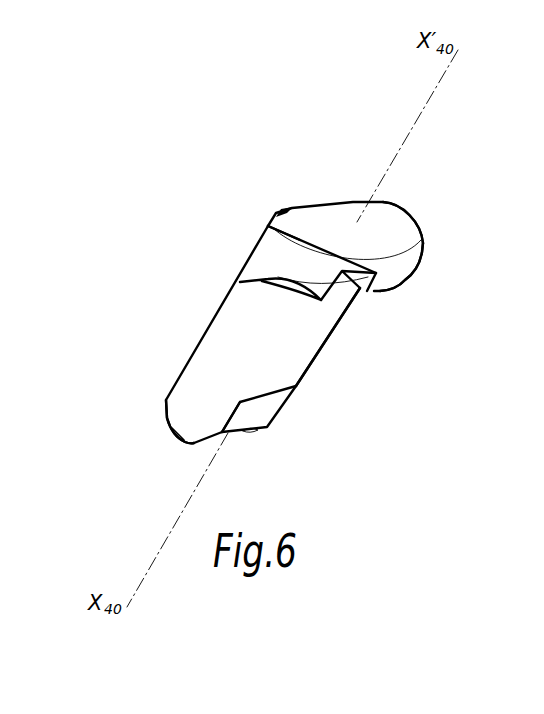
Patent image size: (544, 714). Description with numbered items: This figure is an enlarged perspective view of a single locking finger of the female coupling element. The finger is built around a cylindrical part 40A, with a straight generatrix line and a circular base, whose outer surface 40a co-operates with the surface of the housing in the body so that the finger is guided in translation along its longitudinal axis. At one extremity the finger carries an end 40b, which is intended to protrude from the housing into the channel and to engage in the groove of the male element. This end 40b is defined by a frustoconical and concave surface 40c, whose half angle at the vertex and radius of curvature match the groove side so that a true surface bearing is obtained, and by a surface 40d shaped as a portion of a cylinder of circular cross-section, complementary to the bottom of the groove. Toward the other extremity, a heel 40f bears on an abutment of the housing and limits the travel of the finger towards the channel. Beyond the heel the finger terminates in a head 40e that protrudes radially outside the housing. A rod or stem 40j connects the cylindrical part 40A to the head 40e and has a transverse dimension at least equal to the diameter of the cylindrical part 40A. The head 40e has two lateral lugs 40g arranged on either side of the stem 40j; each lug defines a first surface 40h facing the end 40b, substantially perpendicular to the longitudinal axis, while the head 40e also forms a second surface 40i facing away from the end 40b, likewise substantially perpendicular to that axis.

The cylindrical part 40A is at (184, 350).
The outer surface 40a is at (308, 344).
The end 40b is at (196, 403).
The frustoconical and concave surface 40c is at (267, 410).
The surface in the shape of a portion of a cylinder 40d is at (174, 438).
The head 40e is at (323, 233).
The heel 40f is at (393, 275).
The lateral lugs 40g is at (280, 224).
The first surface 40h is at (278, 247).
The second surface 40i is at (398, 233).
The rod or stem 40j is at (262, 278).